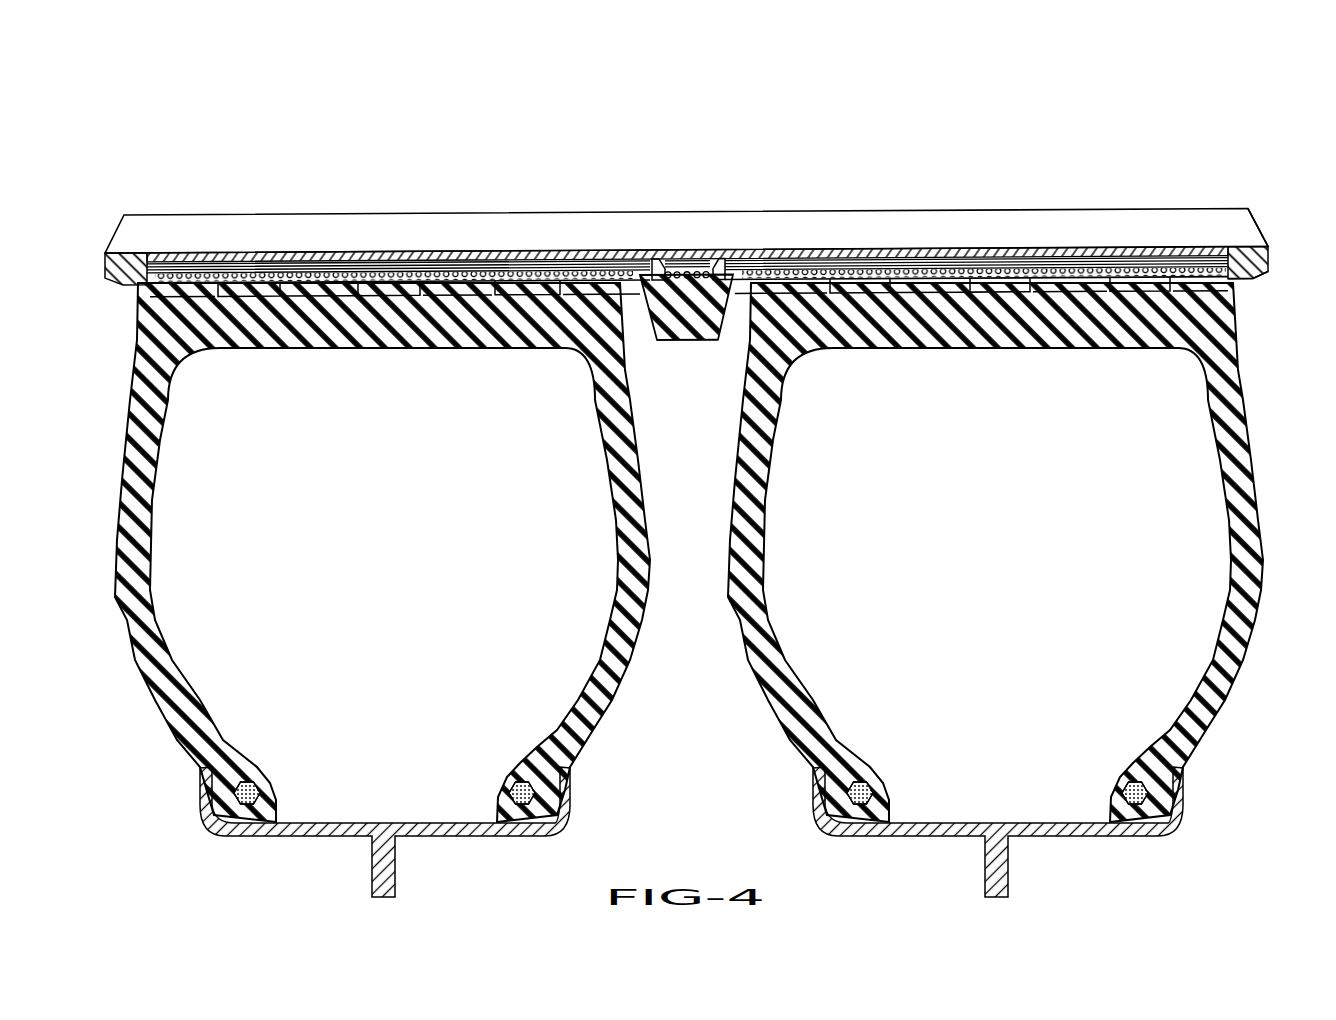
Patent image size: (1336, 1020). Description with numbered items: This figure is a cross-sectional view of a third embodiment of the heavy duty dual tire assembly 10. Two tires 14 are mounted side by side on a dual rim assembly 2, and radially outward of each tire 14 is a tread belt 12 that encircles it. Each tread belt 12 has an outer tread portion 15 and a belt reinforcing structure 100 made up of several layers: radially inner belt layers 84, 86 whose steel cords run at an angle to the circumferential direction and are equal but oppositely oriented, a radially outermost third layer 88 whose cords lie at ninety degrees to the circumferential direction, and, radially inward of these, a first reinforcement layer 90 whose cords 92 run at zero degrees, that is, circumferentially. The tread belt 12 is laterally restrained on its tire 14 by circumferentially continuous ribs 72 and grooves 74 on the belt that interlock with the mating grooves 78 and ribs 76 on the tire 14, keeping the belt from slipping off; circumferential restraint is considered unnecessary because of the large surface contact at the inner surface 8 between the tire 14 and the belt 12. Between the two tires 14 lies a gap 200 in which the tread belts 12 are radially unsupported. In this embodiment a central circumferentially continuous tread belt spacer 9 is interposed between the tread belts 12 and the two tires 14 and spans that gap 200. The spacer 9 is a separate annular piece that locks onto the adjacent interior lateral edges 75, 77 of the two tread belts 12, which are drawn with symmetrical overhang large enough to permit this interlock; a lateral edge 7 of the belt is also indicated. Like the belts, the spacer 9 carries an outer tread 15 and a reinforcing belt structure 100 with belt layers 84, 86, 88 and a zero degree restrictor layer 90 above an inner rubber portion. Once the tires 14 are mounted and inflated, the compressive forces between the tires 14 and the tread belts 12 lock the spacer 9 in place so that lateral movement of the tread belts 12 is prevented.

The dual rim assembly 2 is at (333, 830).
The plate edge 7 is at (1268, 243).
The inner surface 8 is at (1250, 283).
The tread belt spacer 9 is at (712, 348).
The dual tire assembly 10 is at (106, 170).
The tread belt 12 is at (184, 212).
The tire 14 is at (118, 496).
The tread portion 15 is at (395, 213).
The rib 72 is at (512, 290).
The groove 74 is at (447, 290).
The lateral edge 75 is at (103, 262).
The rib 76 is at (320, 292).
The lateral edge 77 is at (655, 262).
The groove 78 is at (395, 292).
The radially inner belt layer 84 is at (1170, 282).
The radially inner belt layer 86 is at (1098, 282).
The radially outermost third layer 88 is at (1016, 278).
The first reinforcement layer 90 is at (270, 282).
The cords 92 is at (347, 290).
The belt reinforcing structure 100 is at (708, 245).
The gap 200 is at (688, 402).